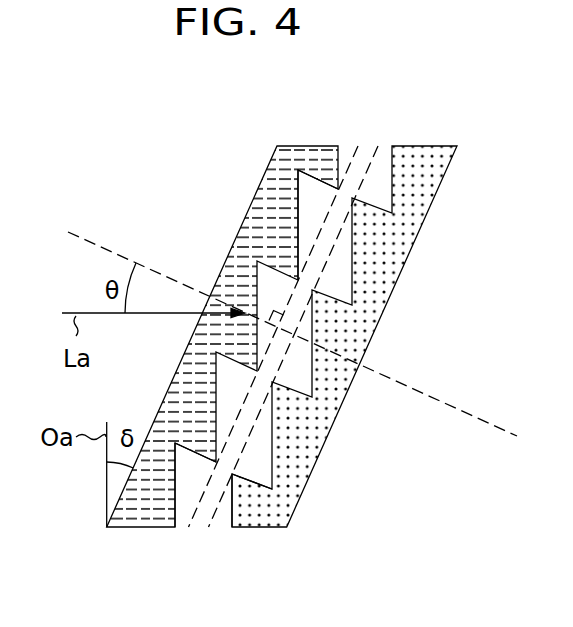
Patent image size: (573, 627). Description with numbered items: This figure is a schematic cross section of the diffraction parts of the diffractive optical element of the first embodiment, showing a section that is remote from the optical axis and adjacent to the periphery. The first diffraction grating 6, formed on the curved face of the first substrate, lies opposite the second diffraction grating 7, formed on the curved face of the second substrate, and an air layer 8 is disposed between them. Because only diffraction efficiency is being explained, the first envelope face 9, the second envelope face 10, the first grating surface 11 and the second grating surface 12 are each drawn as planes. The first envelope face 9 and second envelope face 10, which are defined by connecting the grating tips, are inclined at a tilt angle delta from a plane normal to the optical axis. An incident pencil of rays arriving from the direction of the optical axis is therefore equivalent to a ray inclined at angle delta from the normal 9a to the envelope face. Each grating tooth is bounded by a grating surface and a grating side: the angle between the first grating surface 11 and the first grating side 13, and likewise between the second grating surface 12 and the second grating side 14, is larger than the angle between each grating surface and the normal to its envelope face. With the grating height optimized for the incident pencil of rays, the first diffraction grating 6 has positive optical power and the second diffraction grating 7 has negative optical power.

The first diffraction grating 6 is at (252, 202).
The second diffraction grating 7 is at (392, 242).
The air layer 8 is at (313, 198).
The first envelope face 9 is at (245, 402).
The normal 9a is at (455, 408).
The second envelope face 10 is at (238, 457).
The first grating surface 11 is at (175, 513).
The second grating surface 12 is at (232, 506).
The first grating side 13 is at (177, 492).
The second grating side 14 is at (247, 480).